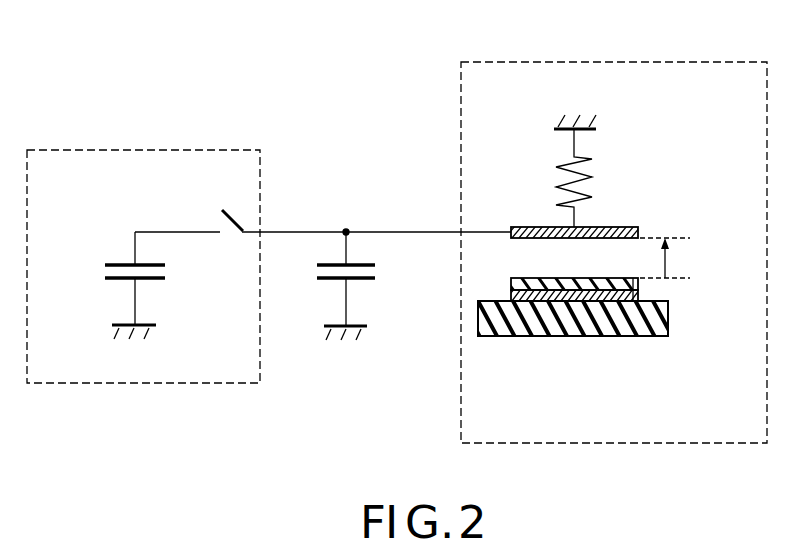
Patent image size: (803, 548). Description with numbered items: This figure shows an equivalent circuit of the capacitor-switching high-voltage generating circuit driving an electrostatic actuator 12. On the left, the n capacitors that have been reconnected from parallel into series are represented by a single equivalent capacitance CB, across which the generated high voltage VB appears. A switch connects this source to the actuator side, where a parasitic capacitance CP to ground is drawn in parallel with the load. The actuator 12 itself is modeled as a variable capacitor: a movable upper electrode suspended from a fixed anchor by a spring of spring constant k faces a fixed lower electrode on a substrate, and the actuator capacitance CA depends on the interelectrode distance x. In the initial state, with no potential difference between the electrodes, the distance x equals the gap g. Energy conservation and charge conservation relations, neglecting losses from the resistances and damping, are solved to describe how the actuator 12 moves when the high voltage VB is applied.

The actuator 12 is at (613, 229).
The equivalent capacitance CB is at (117, 298).
The parasitic capacitance CP is at (362, 286).
The actuator capacitance CA is at (561, 273).
The generated high voltage VB is at (123, 230).
The spring constant k is at (563, 178).
The interelectrode distance x is at (673, 258).